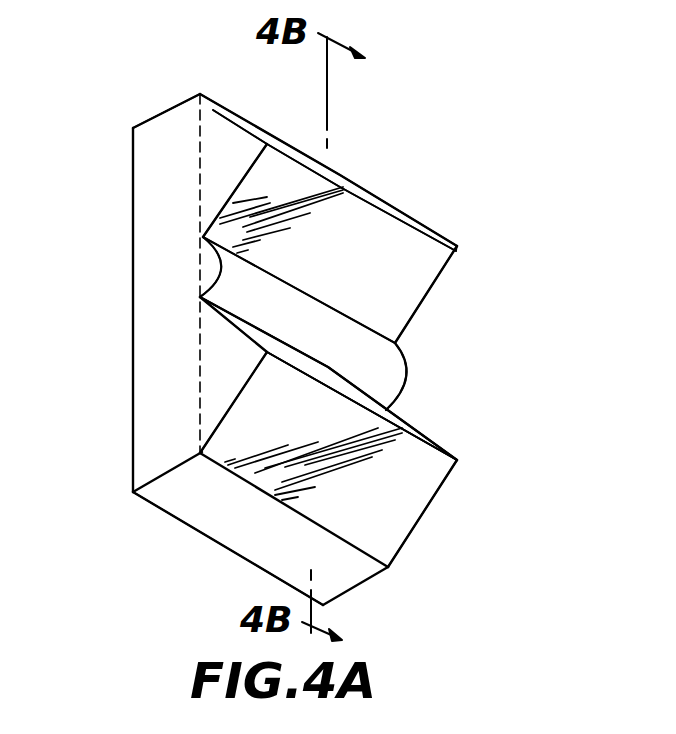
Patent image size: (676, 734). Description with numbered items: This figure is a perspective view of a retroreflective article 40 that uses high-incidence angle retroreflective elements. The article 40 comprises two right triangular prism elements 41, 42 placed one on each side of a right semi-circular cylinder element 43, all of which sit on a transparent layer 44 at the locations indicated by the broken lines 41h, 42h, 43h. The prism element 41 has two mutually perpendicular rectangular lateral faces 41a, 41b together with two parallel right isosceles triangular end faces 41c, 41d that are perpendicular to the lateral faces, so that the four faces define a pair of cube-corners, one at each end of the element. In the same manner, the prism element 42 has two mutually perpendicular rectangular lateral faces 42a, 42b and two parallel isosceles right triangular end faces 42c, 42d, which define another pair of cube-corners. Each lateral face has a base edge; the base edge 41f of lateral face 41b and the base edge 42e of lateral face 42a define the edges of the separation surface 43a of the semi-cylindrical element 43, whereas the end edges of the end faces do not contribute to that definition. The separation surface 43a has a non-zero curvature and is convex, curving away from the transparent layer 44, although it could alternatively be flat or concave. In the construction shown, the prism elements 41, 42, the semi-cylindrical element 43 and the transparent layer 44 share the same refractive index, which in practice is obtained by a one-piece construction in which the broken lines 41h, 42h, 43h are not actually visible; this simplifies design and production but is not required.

The retroreflective article 40 is at (395, 184).
The right triangular prism element 41 is at (339, 184).
The rectangular lateral face 41a is at (292, 147).
The rectangular lateral face 41b is at (420, 268).
The right isosceles triangular end face 41c is at (220, 122).
The right isosceles triangular end face 41d is at (423, 303).
The base edge 41f is at (203, 237).
The broken line 41h is at (200, 144).
The right triangular prism element 42 is at (387, 513).
The rectangular lateral face 42a is at (400, 425).
The rectangular lateral face 42b is at (432, 480).
The isosceles right triangular end face 42c is at (228, 355).
The isosceles right triangular end face 42d is at (423, 517).
The base edge 42e is at (200, 297).
The broken line 42h is at (198, 401).
The right semi-circular cylinder element 43 is at (403, 365).
The separation surface 43a is at (413, 383).
The broken line 43h is at (198, 265).
The transparent layer 44 is at (140, 473).